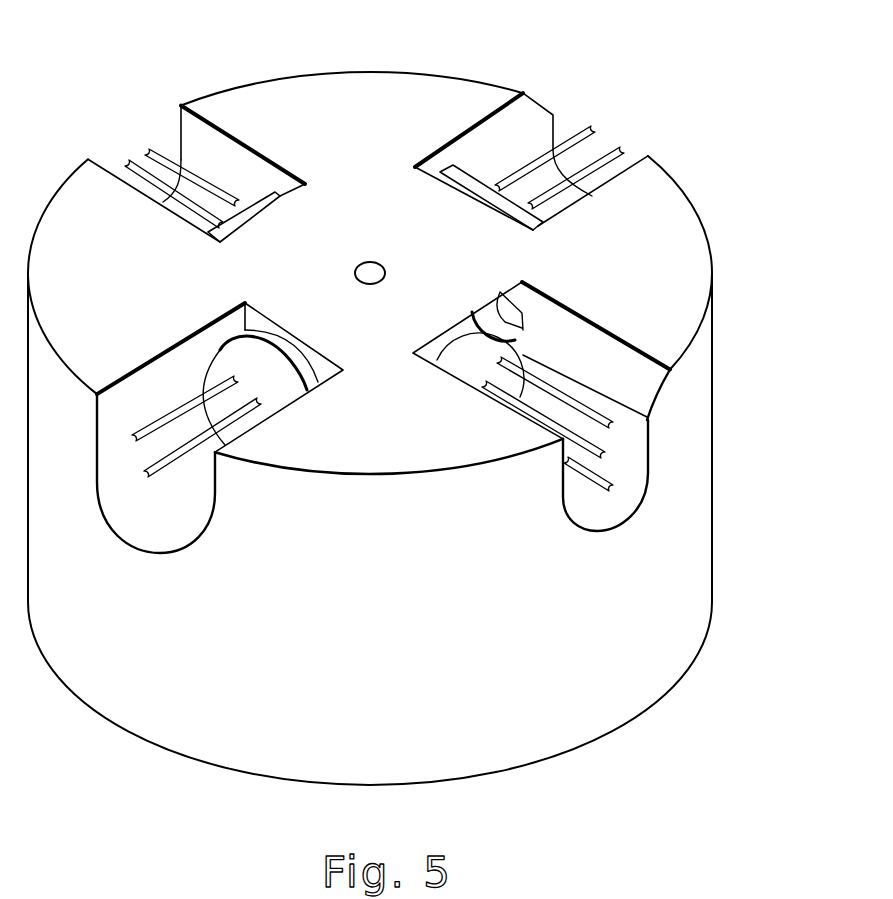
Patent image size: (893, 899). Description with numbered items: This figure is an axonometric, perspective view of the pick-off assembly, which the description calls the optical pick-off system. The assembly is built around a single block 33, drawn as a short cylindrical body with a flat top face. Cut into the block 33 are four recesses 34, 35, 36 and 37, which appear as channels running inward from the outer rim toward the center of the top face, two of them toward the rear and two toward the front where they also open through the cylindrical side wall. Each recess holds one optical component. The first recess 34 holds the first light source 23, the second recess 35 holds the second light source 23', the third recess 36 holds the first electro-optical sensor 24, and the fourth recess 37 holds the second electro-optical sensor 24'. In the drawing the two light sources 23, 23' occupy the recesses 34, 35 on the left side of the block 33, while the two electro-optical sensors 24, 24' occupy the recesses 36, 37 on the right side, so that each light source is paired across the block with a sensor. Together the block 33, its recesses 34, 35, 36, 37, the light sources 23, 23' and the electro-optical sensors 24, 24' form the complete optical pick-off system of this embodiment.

The block 33 is at (692, 435).
The recess 34 is at (228, 156).
The recess 37 is at (533, 148).
The recess 35 is at (177, 373).
The recess 36 is at (583, 500).
The first light source 23 is at (262, 221).
The second electro-optical sensor 24' is at (490, 206).
The second light source 23' is at (258, 403).
The first electro-optical sensor 24 is at (534, 371).